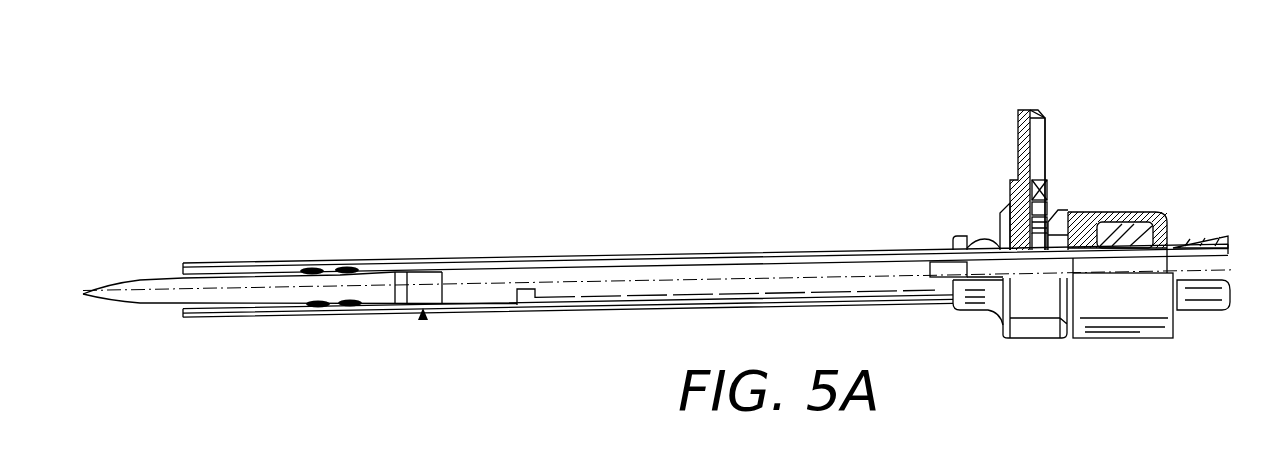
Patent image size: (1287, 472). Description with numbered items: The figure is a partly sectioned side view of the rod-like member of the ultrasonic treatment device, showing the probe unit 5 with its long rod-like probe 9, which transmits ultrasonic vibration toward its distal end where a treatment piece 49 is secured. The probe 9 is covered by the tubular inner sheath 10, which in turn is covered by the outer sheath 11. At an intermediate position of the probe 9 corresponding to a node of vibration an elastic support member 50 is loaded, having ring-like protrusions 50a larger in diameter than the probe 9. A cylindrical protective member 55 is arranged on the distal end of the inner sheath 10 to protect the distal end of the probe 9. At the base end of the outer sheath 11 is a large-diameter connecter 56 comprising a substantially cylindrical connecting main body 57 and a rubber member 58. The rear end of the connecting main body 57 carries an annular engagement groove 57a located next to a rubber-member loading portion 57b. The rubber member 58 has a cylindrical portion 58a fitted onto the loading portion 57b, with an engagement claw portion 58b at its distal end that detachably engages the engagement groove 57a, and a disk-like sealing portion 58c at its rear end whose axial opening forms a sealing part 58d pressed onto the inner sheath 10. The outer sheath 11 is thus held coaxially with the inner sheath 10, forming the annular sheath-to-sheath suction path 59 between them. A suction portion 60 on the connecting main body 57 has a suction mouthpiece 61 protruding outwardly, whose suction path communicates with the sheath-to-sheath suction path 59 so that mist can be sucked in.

The probe unit 5 is at (160, 262).
The probe 9 is at (481, 296).
The inner sheath 10 is at (606, 255).
The outer sheath 11 is at (551, 257).
The treatment piece 49 is at (140, 304).
The elastic support member 50 is at (424, 320).
The ring-like protrusions 50a is at (430, 272).
The protective member 55 is at (242, 312).
The connecter 56 is at (990, 205).
The connecting main body 57 is at (995, 240).
The engagement groove 57a is at (1090, 237).
The rubber-member loading portion 57b is at (1132, 230).
The rubber member 58 is at (1128, 322).
The cylindrical portion 58a is at (1113, 212).
The engagement claw portion 58b is at (1080, 220).
The sealing portion 58c is at (1170, 214).
The sealing part 58d is at (1160, 253).
The sheath-to-sheath suction path 59 is at (301, 268).
The suction portion 60 is at (1015, 98).
The suction mouthpiece 61 is at (1047, 152).